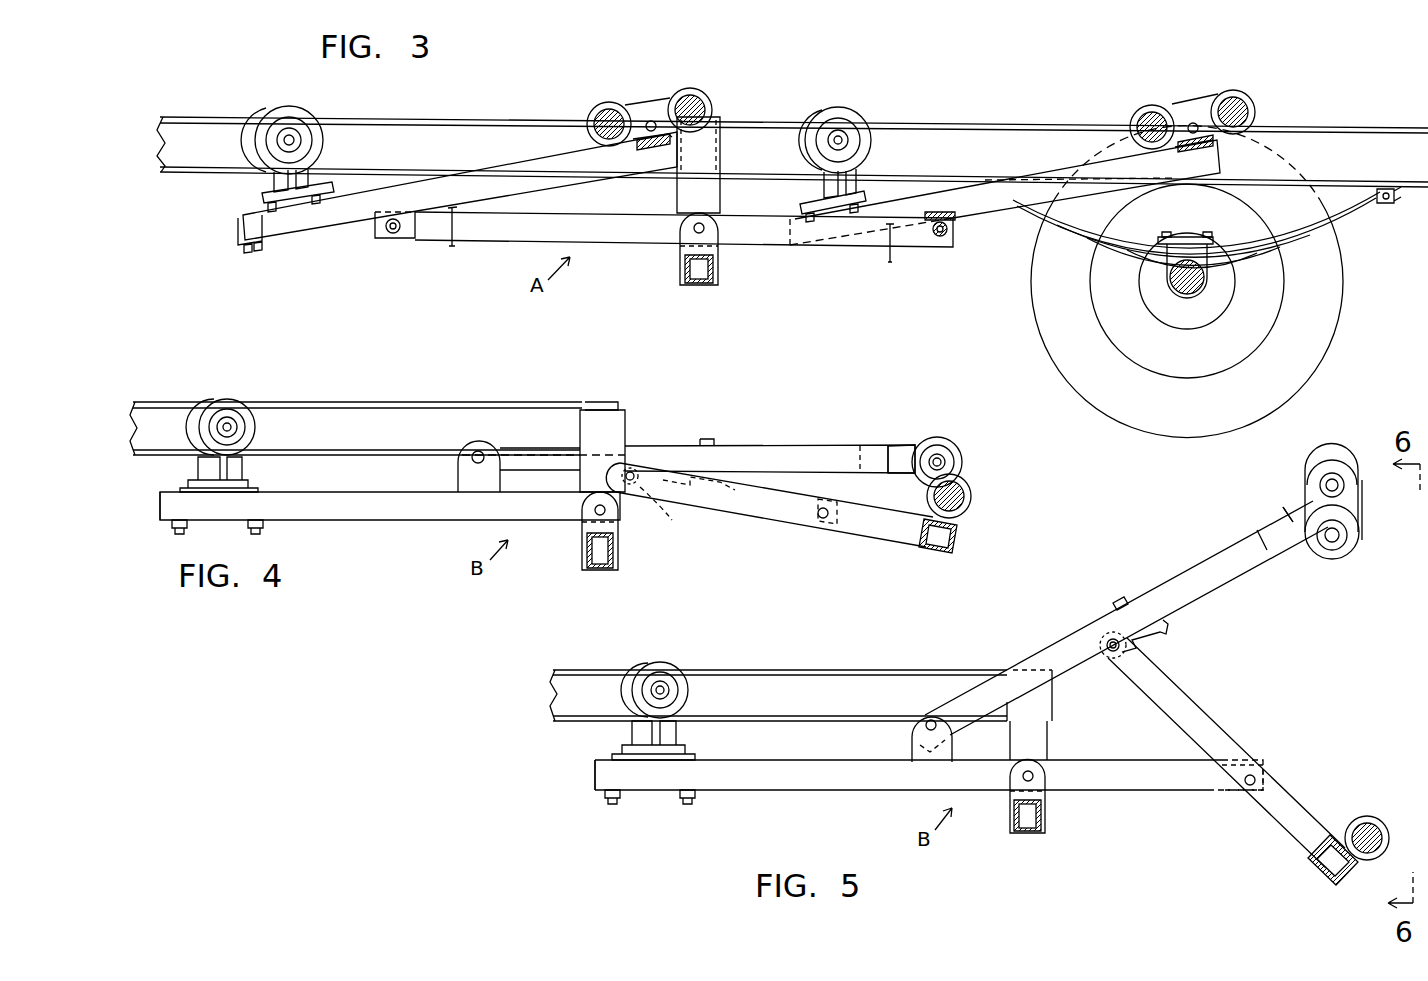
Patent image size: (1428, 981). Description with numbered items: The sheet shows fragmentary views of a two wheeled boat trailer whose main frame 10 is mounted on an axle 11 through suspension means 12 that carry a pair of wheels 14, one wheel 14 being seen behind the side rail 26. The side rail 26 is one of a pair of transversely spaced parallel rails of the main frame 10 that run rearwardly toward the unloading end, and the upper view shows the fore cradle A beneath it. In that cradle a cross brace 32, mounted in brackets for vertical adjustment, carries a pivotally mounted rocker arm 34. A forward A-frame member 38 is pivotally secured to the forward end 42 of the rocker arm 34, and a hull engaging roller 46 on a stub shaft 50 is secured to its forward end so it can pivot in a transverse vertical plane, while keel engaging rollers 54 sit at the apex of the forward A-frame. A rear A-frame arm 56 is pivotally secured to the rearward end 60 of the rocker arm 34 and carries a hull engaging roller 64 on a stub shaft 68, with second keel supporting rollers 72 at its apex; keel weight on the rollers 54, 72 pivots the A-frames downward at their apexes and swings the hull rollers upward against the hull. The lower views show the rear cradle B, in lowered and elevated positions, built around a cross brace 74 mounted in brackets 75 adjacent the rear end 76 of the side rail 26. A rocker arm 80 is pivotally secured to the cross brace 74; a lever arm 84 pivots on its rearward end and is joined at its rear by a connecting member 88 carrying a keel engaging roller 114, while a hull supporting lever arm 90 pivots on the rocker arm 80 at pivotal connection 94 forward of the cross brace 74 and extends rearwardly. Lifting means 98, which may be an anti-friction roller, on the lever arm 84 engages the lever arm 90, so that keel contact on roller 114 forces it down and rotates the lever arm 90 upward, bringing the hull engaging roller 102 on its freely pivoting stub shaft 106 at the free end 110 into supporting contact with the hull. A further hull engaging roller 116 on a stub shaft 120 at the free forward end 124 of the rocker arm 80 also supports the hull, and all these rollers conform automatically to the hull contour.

In FIG. 3, the main frame 10 is at (476, 108).
In FIG. 4, the main frame 10 is at (414, 398).
In FIG. 5, the main frame 10 is at (825, 661).
In FIG. 3, the axle 11 is at (1197, 284).
In FIG. 3, the suspension means 12 is at (1262, 262).
In FIG. 3, the wheels 14 is at (1306, 355).
In FIG. 3, the side rail 26 is at (993, 129).
In FIG. 4, the side rail 26 is at (488, 402).
In FIG. 5, the side rail 26 is at (881, 669).
In FIG. 3, the cross brace 32 is at (718, 270).
In FIG. 3, the rocker arm 34 is at (632, 242).
In FIG. 3, the forward A-frame member 38 is at (358, 224).
In FIG. 3, the forward end of rocker arm 42 is at (396, 238).
In FIG. 3, the hull engaging roller 46 is at (273, 113).
In FIG. 3, the stub shaft 50 is at (293, 137).
In FIG. 3, the keel engaging rollers 54 is at (627, 98).
In FIG. 3, the rear A-frame arm 56 is at (982, 214).
In FIG. 3, the rearward end of rocker arm 60 is at (941, 240).
In FIG. 3, the hull engaging roller 64 is at (820, 118).
In FIG. 3, the stub shaft 68 is at (840, 137).
In FIG. 3, the second keel supporting rollers 72 is at (1181, 101).
In FIG. 4, the cross brace 74 is at (620, 566).
In FIG. 5, the cross brace 74 is at (1047, 826).
In FIG. 4, the brackets 75 is at (627, 426).
In FIG. 5, the brackets 75 is at (1050, 713).
In FIG. 4, the rear end of side rail 76 is at (548, 402).
In FIG. 5, the rear end of side rail 76 is at (968, 670).
In FIG. 4, the rocker arm 80 is at (352, 521).
In FIG. 5, the rocker arm 80 is at (805, 791).
In FIG. 4, the lever arm 84 is at (862, 528).
In FIG. 5, the lever arm 84 is at (1178, 688).
In FIG. 4, the connecting member 88 is at (946, 555).
In FIG. 5, the connecting member 88 is at (1333, 884).
In FIG. 4, the hull supporting lever arm 90 is at (822, 447).
In FIG. 5, the hull supporting lever arm 90 is at (1170, 583).
In FIG. 4, the pivotal connection 94 is at (476, 450).
In FIG. 5, the pivotal connection 94 is at (930, 720).
In FIG. 4, the lifting means 98 is at (633, 482).
In FIG. 5, the lifting means 98 is at (1112, 654).
In FIG. 4, the hull engaging roller 102 is at (952, 446).
In FIG. 5, the hull engaging roller 102 is at (1362, 480).
In FIG. 4, the stub shaft 106 is at (962, 462).
In FIG. 5, the stub shaft 106 is at (1318, 488).
In FIG. 4, the free end of lever arm 110 is at (901, 446).
In FIG. 5, the free end of lever arm 110 is at (1296, 513).
In FIG. 4, the keel engaging roller 114 is at (971, 500).
In FIG. 5, the keel engaging roller 114 is at (1379, 823).
In FIG. 4, the hull engaging roller 116 is at (226, 400).
In FIG. 5, the hull engaging roller 116 is at (658, 664).
In FIG. 4, the stub shaft 120 is at (238, 428).
In FIG. 5, the stub shaft 120 is at (672, 692).
In FIG. 4, the free forward end of rocker arm 124 is at (162, 502).
In FIG. 5, the free forward end of rocker arm 124 is at (645, 791).